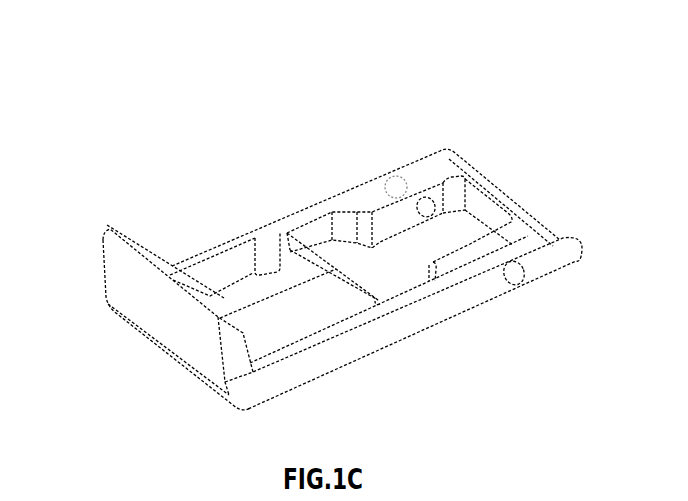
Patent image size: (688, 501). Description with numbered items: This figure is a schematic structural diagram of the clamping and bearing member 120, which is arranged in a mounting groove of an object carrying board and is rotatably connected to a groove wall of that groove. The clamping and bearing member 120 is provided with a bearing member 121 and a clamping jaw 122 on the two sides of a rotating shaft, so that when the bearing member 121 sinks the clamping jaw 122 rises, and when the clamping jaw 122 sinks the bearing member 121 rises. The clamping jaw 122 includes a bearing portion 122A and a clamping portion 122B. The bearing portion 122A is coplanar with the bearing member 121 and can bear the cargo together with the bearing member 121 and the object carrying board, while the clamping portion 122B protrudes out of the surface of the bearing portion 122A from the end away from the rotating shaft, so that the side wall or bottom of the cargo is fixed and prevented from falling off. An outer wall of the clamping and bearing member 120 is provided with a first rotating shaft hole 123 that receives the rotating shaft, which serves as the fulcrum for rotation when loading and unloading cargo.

The clamping and bearing member 120 is at (311, 55).
The bearing member 121 is at (495, 192).
The clamping jaw 122 is at (261, 229).
The bearing portion 122A is at (312, 206).
The clamping portion 122B is at (126, 246).
The first rotating shaft hole 123 is at (423, 197).